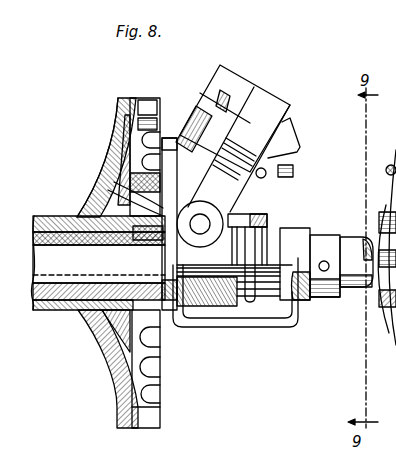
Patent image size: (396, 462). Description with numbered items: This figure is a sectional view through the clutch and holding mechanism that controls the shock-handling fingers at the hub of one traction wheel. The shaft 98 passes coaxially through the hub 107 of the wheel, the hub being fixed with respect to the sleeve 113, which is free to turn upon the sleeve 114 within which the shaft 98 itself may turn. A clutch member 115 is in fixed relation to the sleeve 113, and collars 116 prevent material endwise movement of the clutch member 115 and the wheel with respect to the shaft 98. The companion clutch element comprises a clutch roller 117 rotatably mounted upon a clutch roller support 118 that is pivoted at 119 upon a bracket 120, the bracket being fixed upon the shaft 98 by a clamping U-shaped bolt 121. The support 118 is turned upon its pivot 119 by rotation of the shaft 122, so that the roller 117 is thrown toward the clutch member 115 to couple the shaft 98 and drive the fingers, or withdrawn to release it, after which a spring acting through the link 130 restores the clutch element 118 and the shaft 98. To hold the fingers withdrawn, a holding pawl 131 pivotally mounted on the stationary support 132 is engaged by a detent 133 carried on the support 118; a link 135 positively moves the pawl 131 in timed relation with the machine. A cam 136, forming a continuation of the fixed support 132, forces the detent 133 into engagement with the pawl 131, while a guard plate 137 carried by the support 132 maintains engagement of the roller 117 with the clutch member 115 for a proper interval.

The shaft 98 is at (346, 248).
The hub 107 is at (47, 216).
The sleeve 113 is at (43, 305).
The sleeve 114 is at (50, 312).
The clutch member 115 is at (116, 120).
The collars 116 is at (113, 352).
The clutch roller 117 is at (217, 83).
The clutch roller support 118 is at (262, 108).
The pivot 119 is at (268, 201).
The bracket 120 is at (271, 234).
The clamping U-shaped bolt 121 is at (250, 302).
The shaft 122 is at (383, 220).
The link 130 is at (292, 172).
The holding pawl 131 is at (278, 187).
The stationary support 132 is at (188, 327).
The detent 133 is at (280, 138).
The link 135 is at (193, 130).
The cam 136 is at (114, 156).
The guard plate 137 is at (173, 138).